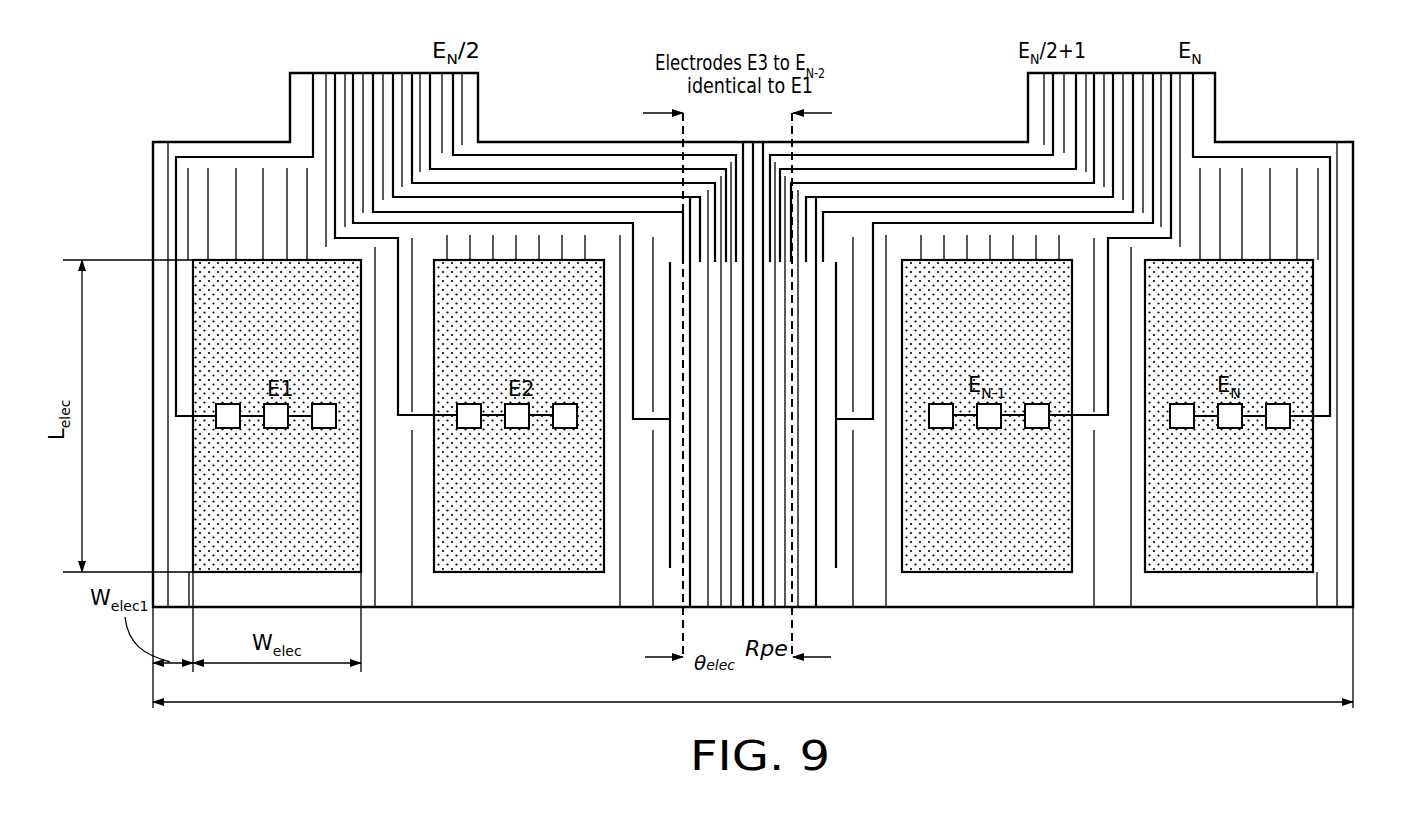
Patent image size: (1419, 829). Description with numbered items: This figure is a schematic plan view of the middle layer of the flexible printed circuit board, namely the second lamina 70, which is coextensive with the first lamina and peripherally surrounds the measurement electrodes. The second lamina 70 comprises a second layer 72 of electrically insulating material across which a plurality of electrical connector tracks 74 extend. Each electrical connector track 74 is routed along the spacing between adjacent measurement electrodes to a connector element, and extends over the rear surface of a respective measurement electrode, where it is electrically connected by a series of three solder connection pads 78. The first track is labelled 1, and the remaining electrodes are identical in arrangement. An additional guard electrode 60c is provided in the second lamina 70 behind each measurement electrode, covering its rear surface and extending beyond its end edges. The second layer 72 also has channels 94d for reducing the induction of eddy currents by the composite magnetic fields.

The second lamina 70 is at (1208, 73).
The electrical connector track 74 is at (335, 108).
The channel 94d is at (1338, 158).
The second layer of electrically insulating material 72 is at (1308, 244).
The additional guard electrode 60c is at (1308, 348).
The connection pad 78 is at (470, 429).
The electrode E1 trace 1 is at (314, 73).